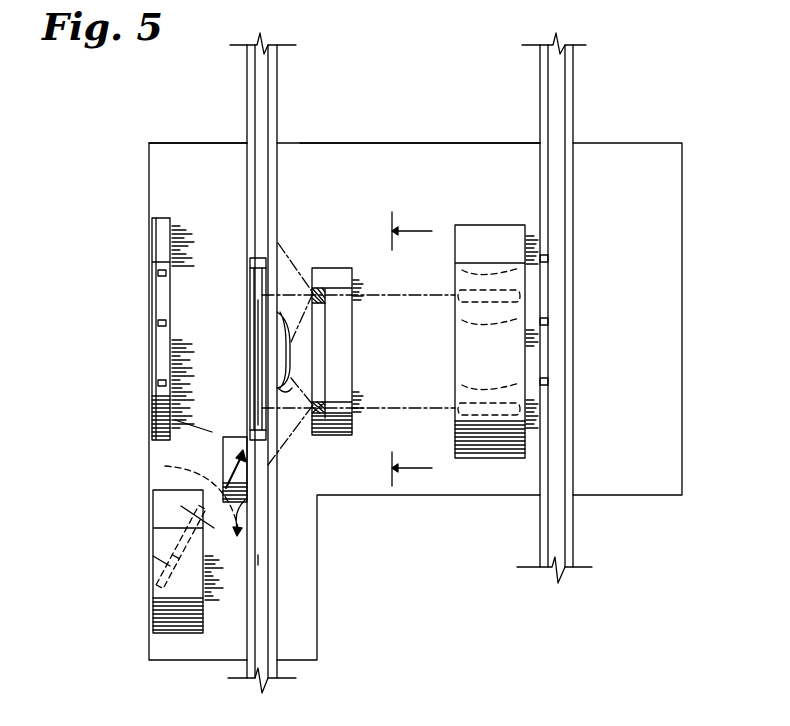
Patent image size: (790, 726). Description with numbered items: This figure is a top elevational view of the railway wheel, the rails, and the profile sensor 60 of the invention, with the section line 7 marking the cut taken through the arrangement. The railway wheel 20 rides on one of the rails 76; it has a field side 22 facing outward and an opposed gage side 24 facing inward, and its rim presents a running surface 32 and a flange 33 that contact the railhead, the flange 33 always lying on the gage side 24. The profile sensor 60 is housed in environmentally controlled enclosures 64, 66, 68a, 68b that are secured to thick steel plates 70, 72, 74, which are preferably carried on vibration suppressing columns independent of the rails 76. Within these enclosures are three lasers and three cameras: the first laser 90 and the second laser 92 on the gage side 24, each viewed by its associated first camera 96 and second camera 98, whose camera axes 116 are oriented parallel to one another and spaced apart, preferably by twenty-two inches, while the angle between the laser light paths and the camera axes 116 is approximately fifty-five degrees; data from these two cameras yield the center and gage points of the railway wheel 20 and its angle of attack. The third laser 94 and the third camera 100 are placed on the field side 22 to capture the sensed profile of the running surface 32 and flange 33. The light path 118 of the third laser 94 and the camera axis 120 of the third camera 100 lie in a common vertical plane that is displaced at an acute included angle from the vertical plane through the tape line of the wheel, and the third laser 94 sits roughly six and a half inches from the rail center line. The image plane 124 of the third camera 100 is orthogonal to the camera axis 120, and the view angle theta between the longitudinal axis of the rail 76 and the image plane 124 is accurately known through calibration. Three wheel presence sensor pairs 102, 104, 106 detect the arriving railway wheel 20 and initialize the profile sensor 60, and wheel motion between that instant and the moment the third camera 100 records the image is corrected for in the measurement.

The profile sensor 60 is at (226, 108).
The rails 76 is at (270, 100).
The steel plate 74 is at (190, 160).
The steel plate 72 is at (431, 160).
The steel plate 70 is at (610, 152).
The environmentally controlled enclosure 64 is at (500, 237).
The environmentally controlled enclosure 66 is at (338, 275).
The railway wheel 20 is at (250, 258).
The field side 22 is at (250, 325).
The gage side 24 is at (277, 386).
The flange 33 is at (261, 418).
The running surface 32 is at (256, 428).
The laser 2 92 is at (318, 292).
The laser 1 90 is at (322, 412).
The laser 3 94 is at (227, 457).
The camera axis 116 is at (389, 292).
The camera 2 98 is at (457, 269).
The camera 1 96 is at (458, 390).
The wheel presence sensor pair 102 is at (152, 272).
The wheel presence sensor pair 104 is at (153, 323).
The wheel presence sensor pair 106 is at (152, 383).
The light path 118 is at (175, 420).
The camera axis 120 is at (165, 466).
The environmentally controlled enclosure 68a is at (157, 250).
The environmentally controlled enclosure 68b is at (163, 514).
The camera 3 100 is at (143, 550).
The image plane 124 is at (256, 562).
The section line 7- 7 is at (418, 349).